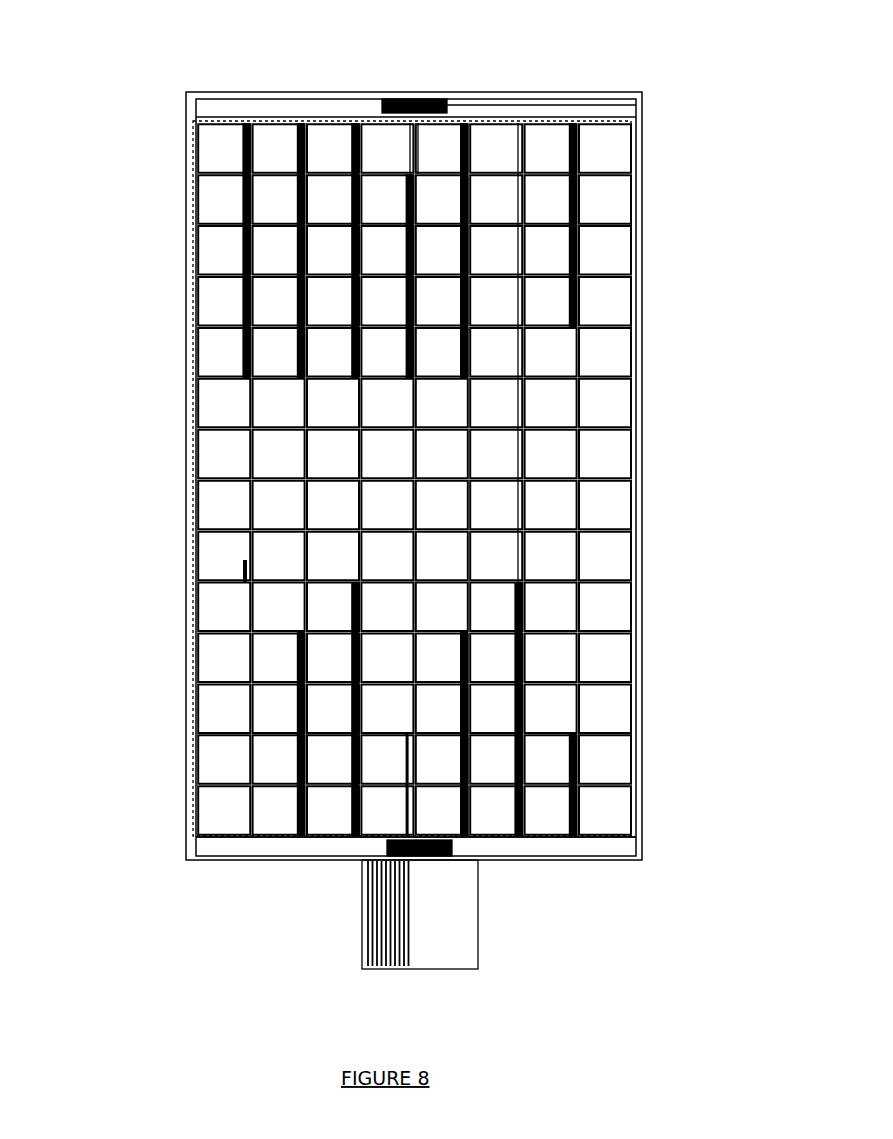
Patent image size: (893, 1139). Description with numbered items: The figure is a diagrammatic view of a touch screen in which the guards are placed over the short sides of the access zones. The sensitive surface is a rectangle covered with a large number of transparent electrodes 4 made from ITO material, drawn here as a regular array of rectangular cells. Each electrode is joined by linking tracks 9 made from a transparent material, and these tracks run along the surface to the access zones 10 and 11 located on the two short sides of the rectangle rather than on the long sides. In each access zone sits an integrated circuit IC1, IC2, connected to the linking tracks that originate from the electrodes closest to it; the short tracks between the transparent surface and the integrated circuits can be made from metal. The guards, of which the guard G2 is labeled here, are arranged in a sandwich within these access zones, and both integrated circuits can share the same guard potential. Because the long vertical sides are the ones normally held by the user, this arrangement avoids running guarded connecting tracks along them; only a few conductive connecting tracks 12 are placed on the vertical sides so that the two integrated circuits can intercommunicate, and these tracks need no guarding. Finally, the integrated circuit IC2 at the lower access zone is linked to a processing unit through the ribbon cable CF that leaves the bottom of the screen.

The access zone 11 is at (191, 107).
The access zone 10 is at (186, 847).
The conductive connecting tracks 12 is at (633, 270).
The transparent electrode 4 is at (608, 408).
The linking tracks 9 is at (583, 703).
The integrated circuit IC1 is at (379, 102).
The integrated circuit IC2 is at (381, 846).
The ribbon cable CF is at (377, 923).
The guard G2 is at (636, 847).